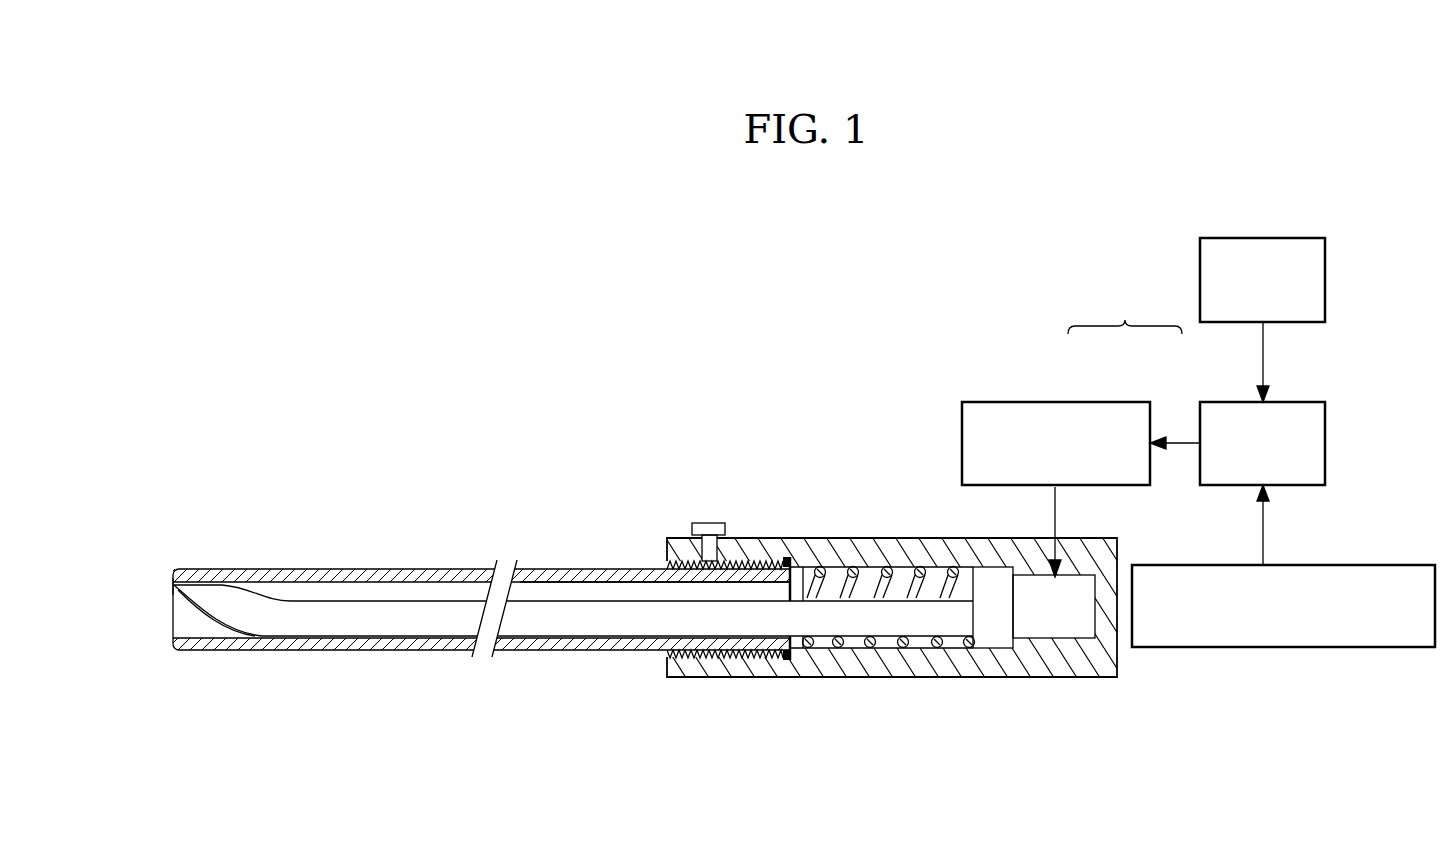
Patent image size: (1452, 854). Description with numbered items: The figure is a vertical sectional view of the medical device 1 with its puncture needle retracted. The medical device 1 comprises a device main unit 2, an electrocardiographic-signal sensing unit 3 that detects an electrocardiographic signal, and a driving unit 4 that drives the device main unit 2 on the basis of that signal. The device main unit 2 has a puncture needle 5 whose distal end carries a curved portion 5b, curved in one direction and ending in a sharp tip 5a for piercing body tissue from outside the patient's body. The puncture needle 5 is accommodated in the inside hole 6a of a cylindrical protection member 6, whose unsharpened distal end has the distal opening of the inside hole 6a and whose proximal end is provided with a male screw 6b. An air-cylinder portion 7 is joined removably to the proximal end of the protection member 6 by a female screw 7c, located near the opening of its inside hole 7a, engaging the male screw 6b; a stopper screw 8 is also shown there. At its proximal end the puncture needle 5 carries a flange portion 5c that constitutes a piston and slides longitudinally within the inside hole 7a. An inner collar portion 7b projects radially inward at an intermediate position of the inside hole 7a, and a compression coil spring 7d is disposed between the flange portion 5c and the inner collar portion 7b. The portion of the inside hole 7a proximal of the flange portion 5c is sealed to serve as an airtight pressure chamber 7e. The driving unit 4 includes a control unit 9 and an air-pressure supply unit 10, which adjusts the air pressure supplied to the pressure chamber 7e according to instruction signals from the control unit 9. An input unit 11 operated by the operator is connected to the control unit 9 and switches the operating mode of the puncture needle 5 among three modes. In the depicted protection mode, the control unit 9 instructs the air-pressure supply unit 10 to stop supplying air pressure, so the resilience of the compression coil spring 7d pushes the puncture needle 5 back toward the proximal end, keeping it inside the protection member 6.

The medical device 1 is at (832, 289).
The device main unit 2 is at (652, 489).
The electrocardiographic-signal sensing unit 3 is at (1263, 649).
The driving unit 4 is at (1125, 311).
The puncture needle 5 is at (428, 600).
The tip 5a is at (176, 598).
The curved portion 5b is at (214, 626).
The flange portion 5c is at (993, 649).
The protection member 6 is at (295, 569).
The inside hole 6a is at (555, 586).
The male screw 6b is at (762, 560).
The air-cylinder portion 7 is at (1092, 678).
The inside hole 7a is at (886, 648).
The inner collar portion 7b is at (809, 580).
The female screw 7c is at (712, 658).
The compression coil spring 7d is at (893, 588).
The pressure chamber 7e is at (1046, 631).
The stopper screw 8 is at (709, 522).
The control unit 9 is at (1210, 402).
The air-pressure supply unit 10 is at (1087, 402).
The input unit 11 is at (1265, 238).